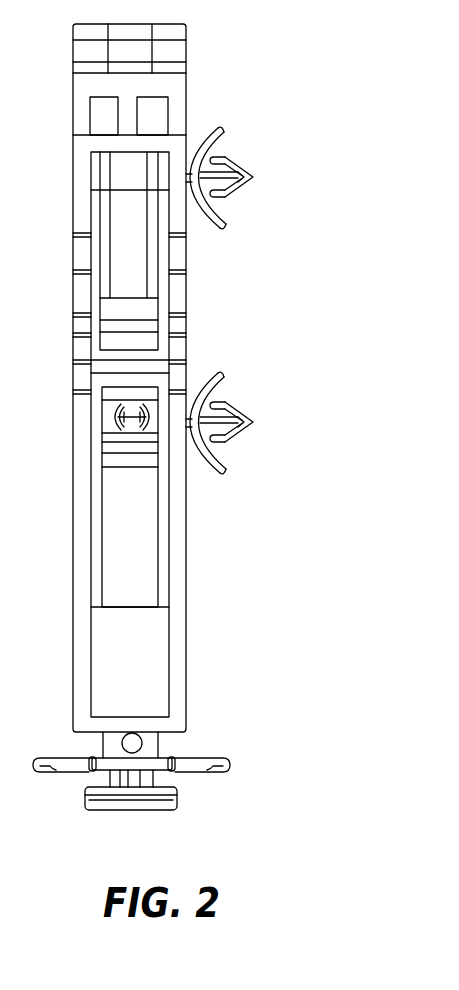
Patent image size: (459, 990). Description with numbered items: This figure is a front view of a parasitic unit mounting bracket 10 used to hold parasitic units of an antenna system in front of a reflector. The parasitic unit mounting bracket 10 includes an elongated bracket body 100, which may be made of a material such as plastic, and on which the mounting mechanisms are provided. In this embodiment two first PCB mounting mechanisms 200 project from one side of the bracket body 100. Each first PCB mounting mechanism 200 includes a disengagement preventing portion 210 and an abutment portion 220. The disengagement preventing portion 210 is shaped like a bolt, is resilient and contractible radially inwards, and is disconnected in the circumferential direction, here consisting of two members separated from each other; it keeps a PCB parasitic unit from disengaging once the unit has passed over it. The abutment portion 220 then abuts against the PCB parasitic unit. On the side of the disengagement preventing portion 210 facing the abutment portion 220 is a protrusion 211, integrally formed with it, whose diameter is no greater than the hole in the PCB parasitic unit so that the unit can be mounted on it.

The parasitic unit mounting bracket 10 is at (356, 210).
The bracket body 100 is at (183, 535).
The first PCB mounting mechanism 200 is at (261, 153).
The disengagement preventing portion 210 is at (250, 192).
The protrusion 211 is at (223, 208).
The abutment portion 220 is at (218, 232).